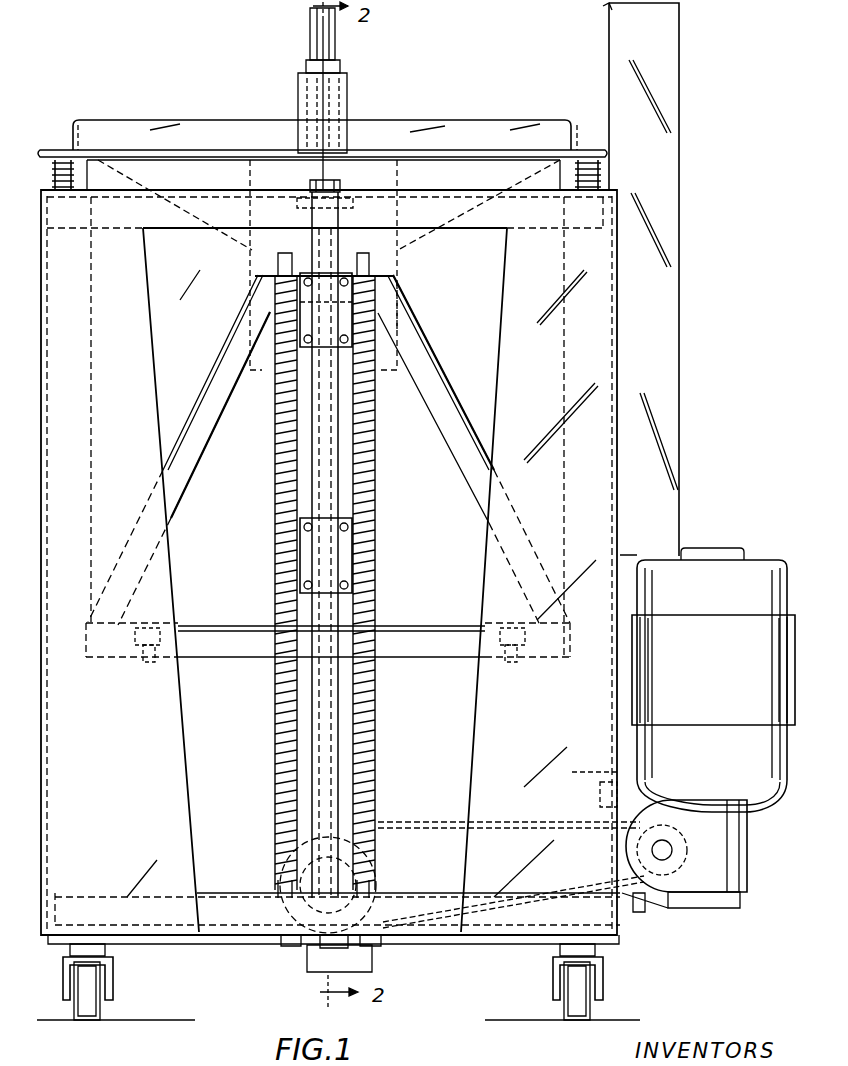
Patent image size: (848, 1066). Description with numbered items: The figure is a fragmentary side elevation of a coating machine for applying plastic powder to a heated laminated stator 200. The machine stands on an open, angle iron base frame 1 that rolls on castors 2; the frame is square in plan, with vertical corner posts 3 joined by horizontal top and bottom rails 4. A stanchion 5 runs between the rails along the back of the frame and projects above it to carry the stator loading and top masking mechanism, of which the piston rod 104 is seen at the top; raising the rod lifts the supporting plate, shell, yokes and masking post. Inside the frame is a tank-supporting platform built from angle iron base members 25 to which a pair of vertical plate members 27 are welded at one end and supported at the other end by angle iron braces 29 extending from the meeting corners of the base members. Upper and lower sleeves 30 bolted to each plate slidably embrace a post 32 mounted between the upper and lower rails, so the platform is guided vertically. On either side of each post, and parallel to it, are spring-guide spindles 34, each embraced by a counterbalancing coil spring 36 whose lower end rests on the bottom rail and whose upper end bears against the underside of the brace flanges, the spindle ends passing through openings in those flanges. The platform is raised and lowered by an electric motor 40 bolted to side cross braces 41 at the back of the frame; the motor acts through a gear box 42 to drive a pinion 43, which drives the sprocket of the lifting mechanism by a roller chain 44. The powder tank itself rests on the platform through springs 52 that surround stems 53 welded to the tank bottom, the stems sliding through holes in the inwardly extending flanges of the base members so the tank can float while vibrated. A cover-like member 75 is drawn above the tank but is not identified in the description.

The base frame 1 is at (622, 398).
The castors 2 is at (113, 983).
The vertical corner posts 3 is at (605, 355).
The top and bottom rails 4 is at (228, 920).
The stanchion 5 is at (668, 168).
The base members 25 is at (240, 650).
The vertical plate members 27 is at (378, 458).
The angle iron braces 29 is at (211, 365).
The sleeves 30 is at (320, 312).
The posts 32 is at (336, 250).
The spring-guide spindles 34 is at (280, 770).
The counterbalancing coil spring 36 is at (275, 527).
The electric motor 40 is at (730, 540).
The side cross braces 41 is at (580, 772).
The gear box 42 is at (748, 870).
The pinion 43 is at (628, 856).
The roller chain 44 is at (489, 808).
The springs 52 is at (125, 667).
The stems 53 is at (148, 680).
The lid 75 is at (474, 128).
The piston rod 104 is at (337, 40).
The laminated stator 200 is at (398, 323).